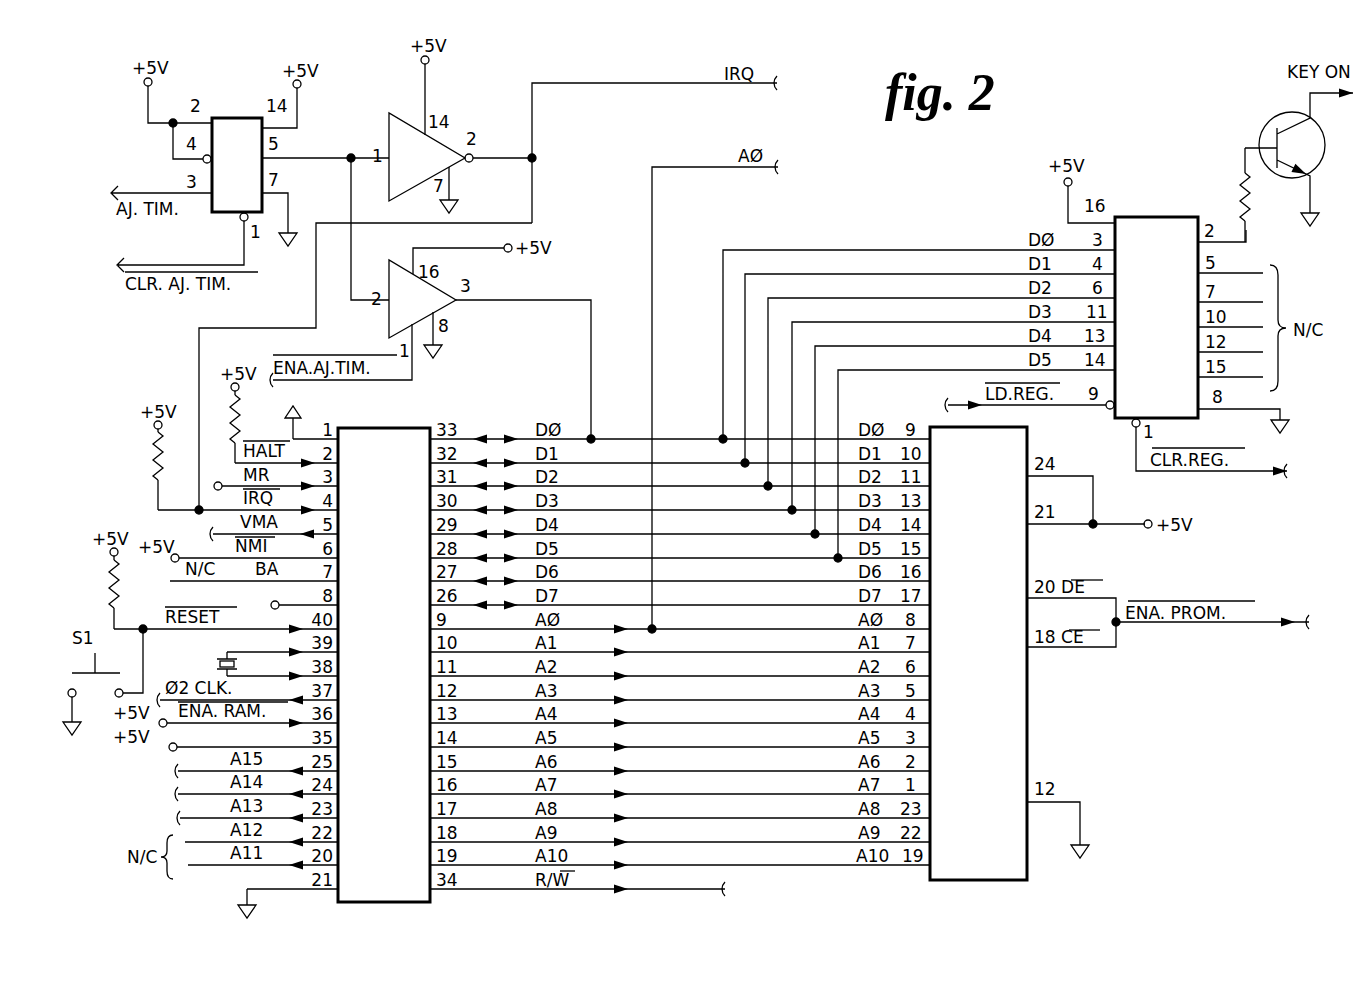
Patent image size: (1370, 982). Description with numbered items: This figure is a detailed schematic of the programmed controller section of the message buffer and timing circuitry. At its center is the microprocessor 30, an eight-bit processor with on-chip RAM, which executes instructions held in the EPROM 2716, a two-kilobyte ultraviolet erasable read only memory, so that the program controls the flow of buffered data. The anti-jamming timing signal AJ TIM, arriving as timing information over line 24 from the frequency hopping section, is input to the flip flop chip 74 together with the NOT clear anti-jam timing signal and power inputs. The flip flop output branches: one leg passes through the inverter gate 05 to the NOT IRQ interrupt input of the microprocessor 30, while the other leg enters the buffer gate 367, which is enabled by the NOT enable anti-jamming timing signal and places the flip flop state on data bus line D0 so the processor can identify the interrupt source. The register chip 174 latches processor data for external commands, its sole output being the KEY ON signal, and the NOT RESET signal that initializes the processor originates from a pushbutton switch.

The microprocessor 30 is at (412, 902).
The EPROM 2716 is at (978, 653).
The LS 174 chip 174 is at (1156, 317).
The LS 74 chip 74 is at (237, 165).
The LS05 gate 05 is at (427, 157).
The LS 367 gate 367 is at (422, 299).
The line 24 is at (161, 176).